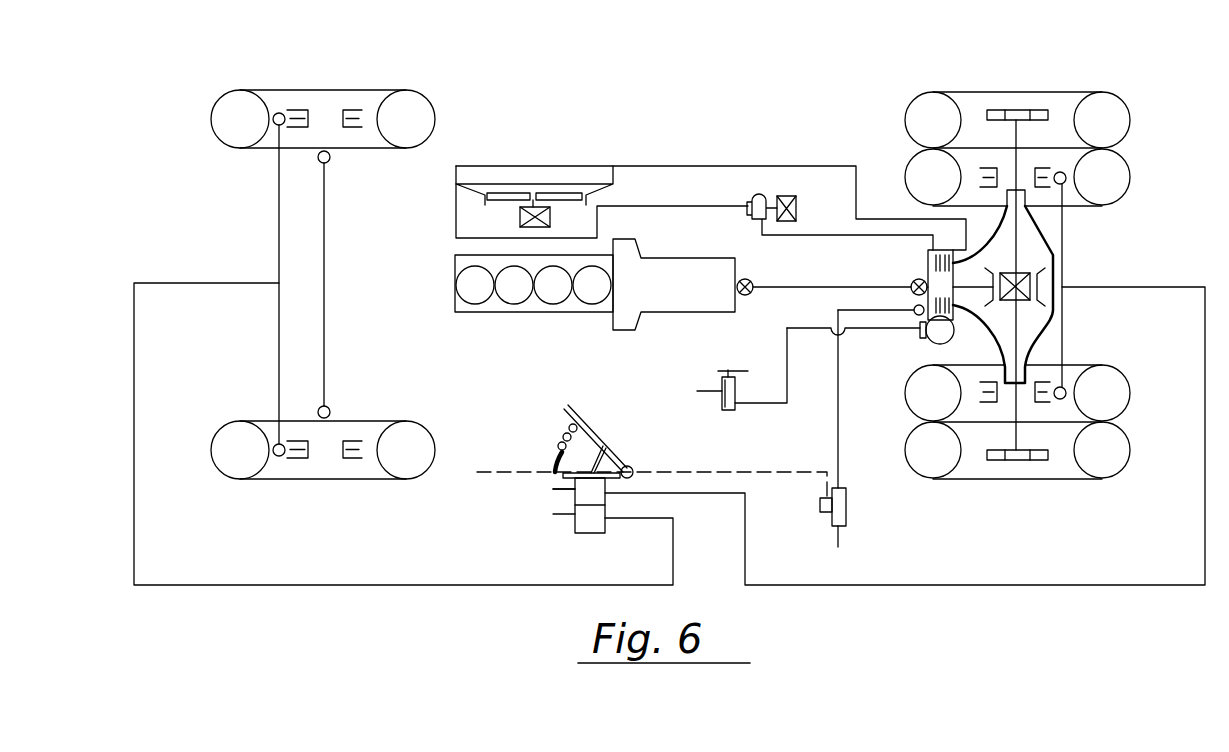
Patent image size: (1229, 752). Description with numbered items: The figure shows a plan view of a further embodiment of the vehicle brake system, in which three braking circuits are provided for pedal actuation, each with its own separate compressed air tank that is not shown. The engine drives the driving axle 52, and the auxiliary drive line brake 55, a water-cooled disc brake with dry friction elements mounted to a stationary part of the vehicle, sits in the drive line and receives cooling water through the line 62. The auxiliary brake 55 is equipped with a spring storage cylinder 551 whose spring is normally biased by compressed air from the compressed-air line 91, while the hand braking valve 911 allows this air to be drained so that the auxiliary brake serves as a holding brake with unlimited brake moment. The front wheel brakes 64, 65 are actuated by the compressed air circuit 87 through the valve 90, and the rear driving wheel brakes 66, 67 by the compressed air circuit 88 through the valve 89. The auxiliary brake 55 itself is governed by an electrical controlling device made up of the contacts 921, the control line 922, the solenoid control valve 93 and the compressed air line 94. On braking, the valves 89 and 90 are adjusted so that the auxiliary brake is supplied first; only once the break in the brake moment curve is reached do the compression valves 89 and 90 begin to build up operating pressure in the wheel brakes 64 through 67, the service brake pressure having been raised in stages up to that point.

The driving axle 52 is at (1045, 240).
The auxiliary drive line brake 55 is at (928, 263).
The spring storage cylinder 551 is at (935, 336).
The cooling-water line 62 is at (704, 166).
The front wheel brake 64 is at (343, 118).
The front wheel brake 65 is at (311, 452).
The driving wheel brake 66 is at (985, 165).
The driving wheel brake 67 is at (985, 403).
The compressed air circuit 87 is at (338, 585).
The compressed air circuit 88 is at (1080, 585).
The valve 89 is at (577, 495).
The valve 90 is at (575, 520).
The compressed-air line 91 is at (787, 346).
The hand braking valve 911 is at (734, 411).
The contacts 921 is at (560, 450).
The control line 922 is at (698, 472).
The solenoid control valve 93 is at (846, 505).
The compressed air line 94 is at (840, 447).